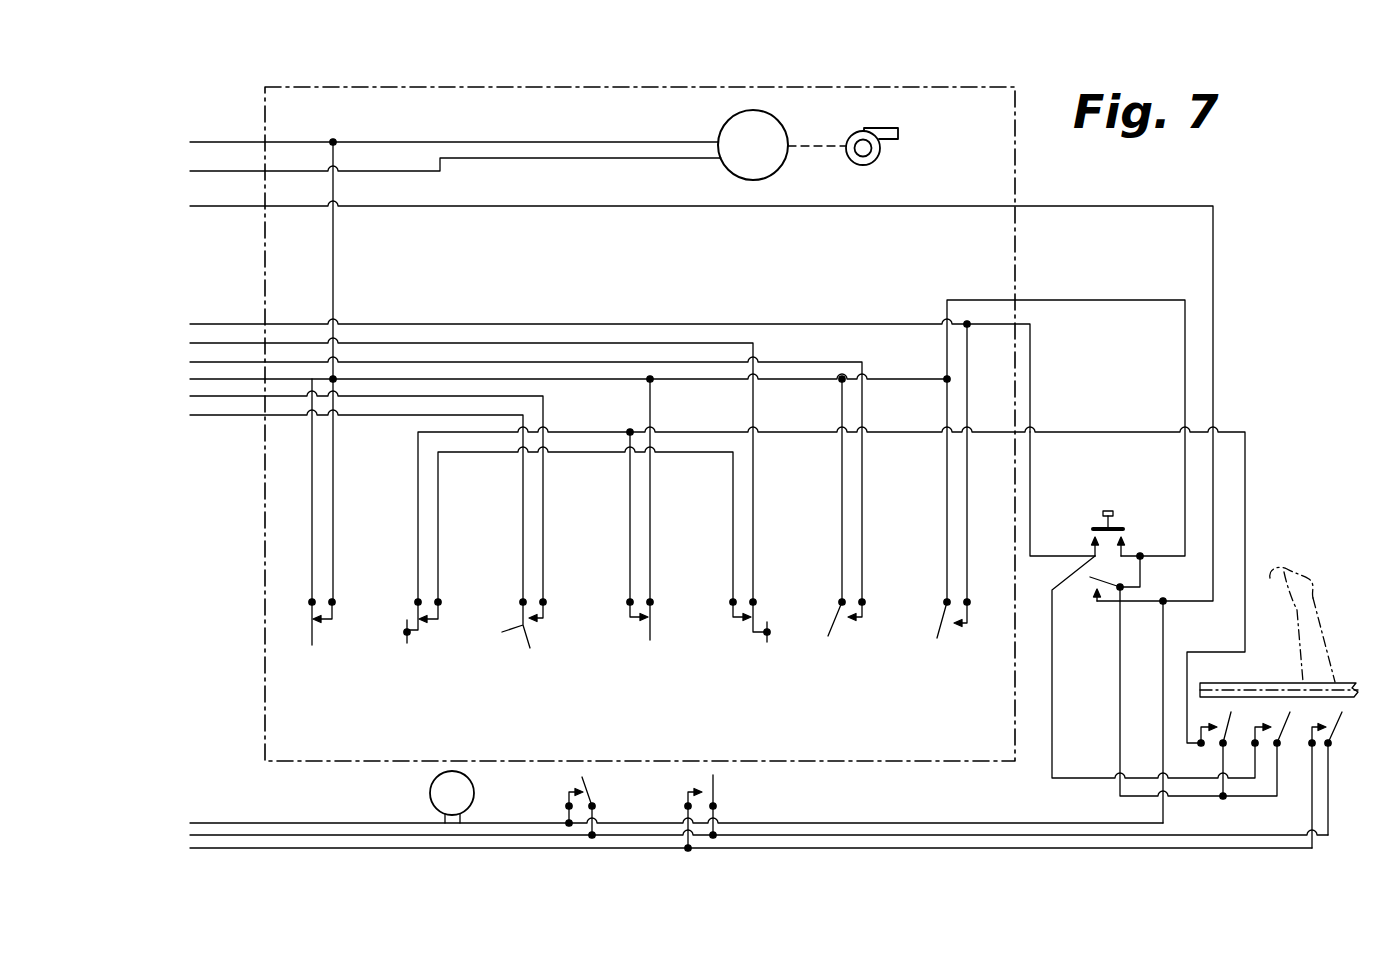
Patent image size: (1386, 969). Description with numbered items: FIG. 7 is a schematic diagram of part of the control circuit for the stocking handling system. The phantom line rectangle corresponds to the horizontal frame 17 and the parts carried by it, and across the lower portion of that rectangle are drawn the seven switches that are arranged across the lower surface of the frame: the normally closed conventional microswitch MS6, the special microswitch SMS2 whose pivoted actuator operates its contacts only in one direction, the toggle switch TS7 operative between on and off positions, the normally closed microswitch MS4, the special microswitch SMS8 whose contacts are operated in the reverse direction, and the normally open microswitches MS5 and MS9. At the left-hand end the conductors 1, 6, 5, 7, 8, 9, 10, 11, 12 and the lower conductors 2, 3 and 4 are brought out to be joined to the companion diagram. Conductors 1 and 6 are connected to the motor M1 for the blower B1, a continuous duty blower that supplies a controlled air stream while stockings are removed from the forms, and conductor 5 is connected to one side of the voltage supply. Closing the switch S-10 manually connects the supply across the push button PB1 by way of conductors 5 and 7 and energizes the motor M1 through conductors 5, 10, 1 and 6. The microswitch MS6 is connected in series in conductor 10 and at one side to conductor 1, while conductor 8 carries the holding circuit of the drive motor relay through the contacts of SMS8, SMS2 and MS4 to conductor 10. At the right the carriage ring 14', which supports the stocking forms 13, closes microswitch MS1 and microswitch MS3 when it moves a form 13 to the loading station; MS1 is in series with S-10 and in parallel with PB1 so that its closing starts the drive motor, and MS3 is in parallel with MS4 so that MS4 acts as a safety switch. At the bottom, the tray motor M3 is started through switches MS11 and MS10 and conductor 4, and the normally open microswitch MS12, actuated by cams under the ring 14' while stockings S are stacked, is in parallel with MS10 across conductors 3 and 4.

The conductor 1 is at (444, 142).
The conductor 2 is at (669, 823).
The conductor 3 is at (752, 835).
The conductor 4 is at (744, 848).
The conductor 5 is at (690, 400).
The conductor 6 is at (444, 169).
The conductor 7 is at (631, 435).
The conductor 8 is at (460, 468).
The conductor 9 is at (515, 477).
The conductor 10 is at (556, 486).
The conductor 11 is at (354, 494).
The conductor 12 is at (343, 504).
The stocking form 13 is at (1308, 583).
The carriage ring 14' is at (1279, 668).
The horizontal frame 17 is at (863, 748).
The blower motor M1 is at (753, 145).
The tray motor M3 is at (452, 797).
The blower B1 is at (854, 132).
The push button PB1 is at (1100, 521).
The stocking S is at (1313, 598).
The switch S-10 is at (1088, 589).
The microswitch MS6 is at (311, 648).
The special microswitch SMS2 is at (411, 648).
The toggle switch TS7 is at (521, 648).
The microswitch MS4 is at (635, 648).
The special microswitch SMS8 is at (740, 648).
The microswitch MS5 is at (845, 648).
The microswitch MS9 is at (936, 648).
The microswitch MS3 is at (1200, 754).
The microswitch MS1 is at (1269, 770).
The microswitch MS12 is at (1343, 780).
The switch MS11 is at (560, 804).
The microswitch MS10 is at (731, 813).